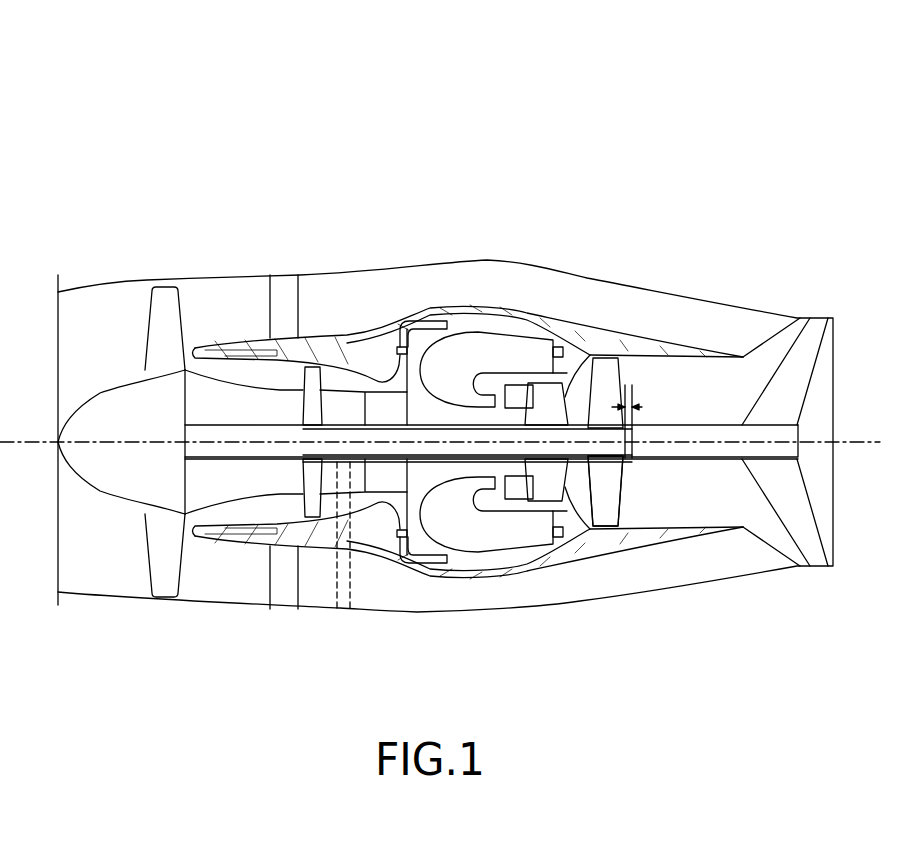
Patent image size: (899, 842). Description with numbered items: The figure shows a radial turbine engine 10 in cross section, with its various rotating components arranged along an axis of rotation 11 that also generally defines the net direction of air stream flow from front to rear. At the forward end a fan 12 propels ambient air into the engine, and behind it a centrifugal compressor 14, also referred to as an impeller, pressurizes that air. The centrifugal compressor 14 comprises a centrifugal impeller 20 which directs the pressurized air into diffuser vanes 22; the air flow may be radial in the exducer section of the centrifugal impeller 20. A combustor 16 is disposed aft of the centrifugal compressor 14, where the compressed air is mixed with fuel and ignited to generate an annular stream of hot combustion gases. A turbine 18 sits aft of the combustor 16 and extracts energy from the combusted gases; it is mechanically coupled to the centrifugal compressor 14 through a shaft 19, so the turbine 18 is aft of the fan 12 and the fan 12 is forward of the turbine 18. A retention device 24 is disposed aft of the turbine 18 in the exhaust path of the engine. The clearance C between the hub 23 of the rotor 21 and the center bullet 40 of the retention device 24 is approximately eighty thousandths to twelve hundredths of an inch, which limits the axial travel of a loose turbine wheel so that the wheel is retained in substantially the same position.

The radial turbine engine 10 is at (690, 195).
The axis of rotation 11 is at (865, 442).
The fan 12 is at (160, 545).
The centrifugal compressor 14 is at (353, 377).
The combustor 16 is at (488, 348).
The turbine 18 is at (580, 487).
The shaft 19 is at (513, 423).
The centrifugal impeller 20 is at (392, 407).
The rotor 21 is at (608, 380).
The diffuser vanes 22 is at (432, 558).
The hub 23 is at (618, 523).
The retention device 24 is at (697, 423).
The center bullet 40 is at (712, 455).